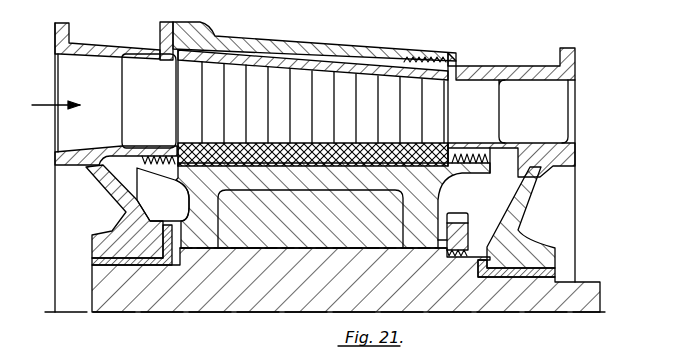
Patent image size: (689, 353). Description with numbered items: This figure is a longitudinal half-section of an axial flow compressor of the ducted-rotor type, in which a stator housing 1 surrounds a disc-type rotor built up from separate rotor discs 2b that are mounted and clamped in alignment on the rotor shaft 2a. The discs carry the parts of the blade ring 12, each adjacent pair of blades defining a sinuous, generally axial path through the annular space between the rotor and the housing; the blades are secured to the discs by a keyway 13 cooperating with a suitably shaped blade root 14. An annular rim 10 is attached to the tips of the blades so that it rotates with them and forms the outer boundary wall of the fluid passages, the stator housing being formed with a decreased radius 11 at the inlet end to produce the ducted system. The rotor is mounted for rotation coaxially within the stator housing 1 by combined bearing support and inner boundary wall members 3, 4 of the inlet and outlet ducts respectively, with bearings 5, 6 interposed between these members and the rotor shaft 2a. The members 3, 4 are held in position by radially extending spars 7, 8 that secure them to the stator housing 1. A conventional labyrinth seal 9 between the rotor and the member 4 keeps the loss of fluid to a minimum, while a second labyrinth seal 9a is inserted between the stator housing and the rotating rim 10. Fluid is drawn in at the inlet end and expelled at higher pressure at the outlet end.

The stator housing 1 is at (363, 50).
The rotor shaft 2a is at (268, 313).
The rotor disc 2b is at (197, 238).
The combined bearing support and inner boundary wall member of the inlet duct 3 is at (108, 190).
The combined bearing support and inner boundary wall member of the outlet duct 4 is at (527, 205).
The bearing 5 is at (92, 261).
The bearing 6 is at (555, 272).
The radially extending spar 7 is at (95, 67).
The radially extending spar 8 is at (523, 95).
The labyrinth seal 9 is at (163, 155).
The second labyrinth seal 9a is at (422, 58).
The annular rim 10 is at (297, 58).
The decreased radius of the stator housing 11 is at (158, 55).
The blade ring 12 is at (320, 85).
The keyway 13 is at (180, 182).
The blade root 14 is at (203, 145).